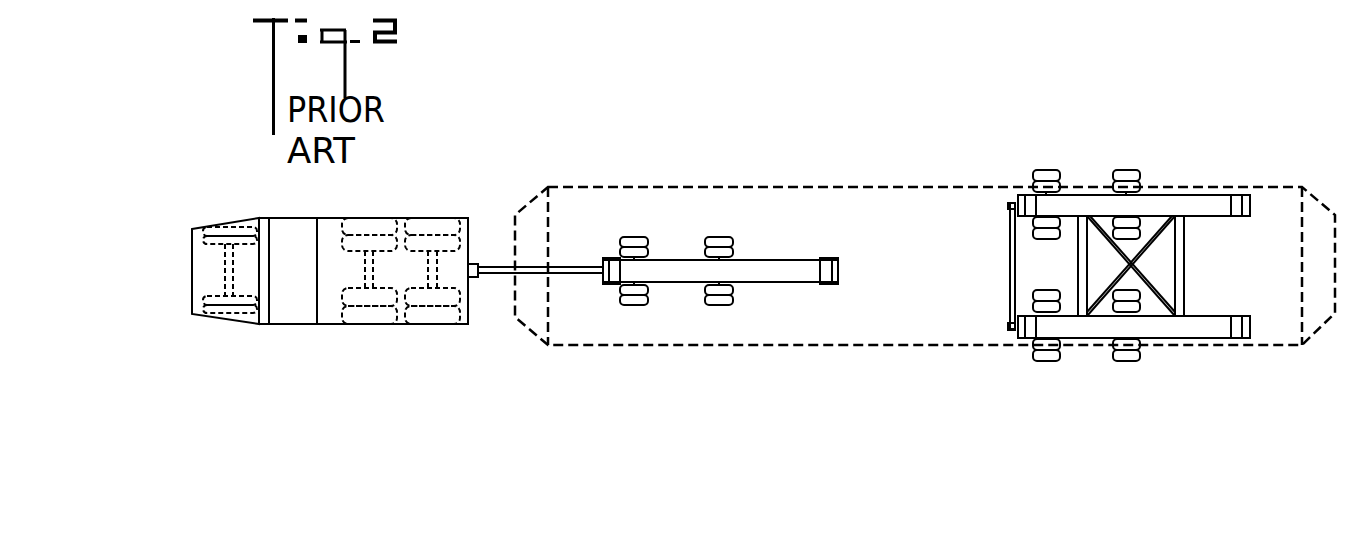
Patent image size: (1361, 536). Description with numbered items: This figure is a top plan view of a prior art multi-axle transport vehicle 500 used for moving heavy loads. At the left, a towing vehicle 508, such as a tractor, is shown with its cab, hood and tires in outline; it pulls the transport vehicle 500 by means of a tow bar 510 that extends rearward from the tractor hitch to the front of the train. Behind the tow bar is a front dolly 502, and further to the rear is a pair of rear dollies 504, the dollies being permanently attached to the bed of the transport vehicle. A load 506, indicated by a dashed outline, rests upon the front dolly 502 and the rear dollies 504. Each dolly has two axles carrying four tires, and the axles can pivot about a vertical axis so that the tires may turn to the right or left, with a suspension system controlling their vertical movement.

The multi-axle transport vehicle 500 is at (478, 143).
The front dolly 502 is at (673, 270).
The rear dollies 504 is at (1115, 210).
The load 506 is at (877, 205).
The towing vehicle 508 is at (390, 218).
The tow bar 510 is at (505, 267).